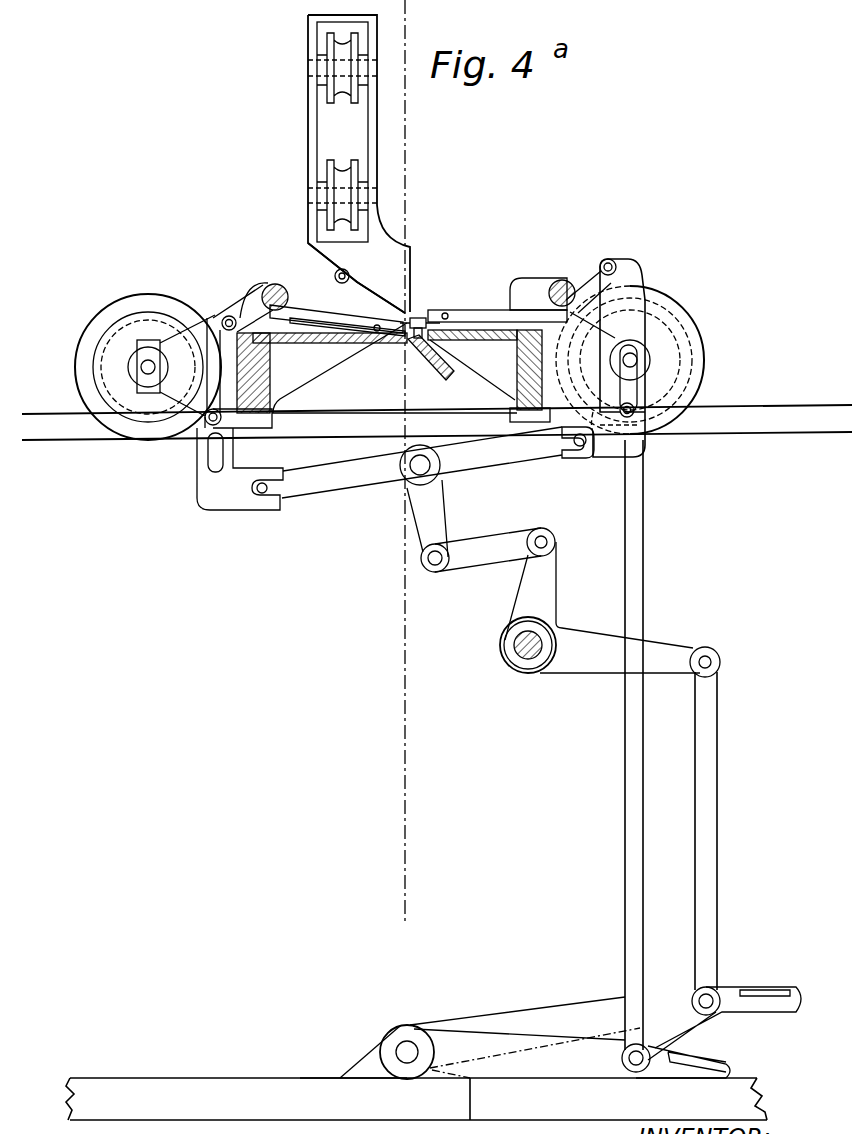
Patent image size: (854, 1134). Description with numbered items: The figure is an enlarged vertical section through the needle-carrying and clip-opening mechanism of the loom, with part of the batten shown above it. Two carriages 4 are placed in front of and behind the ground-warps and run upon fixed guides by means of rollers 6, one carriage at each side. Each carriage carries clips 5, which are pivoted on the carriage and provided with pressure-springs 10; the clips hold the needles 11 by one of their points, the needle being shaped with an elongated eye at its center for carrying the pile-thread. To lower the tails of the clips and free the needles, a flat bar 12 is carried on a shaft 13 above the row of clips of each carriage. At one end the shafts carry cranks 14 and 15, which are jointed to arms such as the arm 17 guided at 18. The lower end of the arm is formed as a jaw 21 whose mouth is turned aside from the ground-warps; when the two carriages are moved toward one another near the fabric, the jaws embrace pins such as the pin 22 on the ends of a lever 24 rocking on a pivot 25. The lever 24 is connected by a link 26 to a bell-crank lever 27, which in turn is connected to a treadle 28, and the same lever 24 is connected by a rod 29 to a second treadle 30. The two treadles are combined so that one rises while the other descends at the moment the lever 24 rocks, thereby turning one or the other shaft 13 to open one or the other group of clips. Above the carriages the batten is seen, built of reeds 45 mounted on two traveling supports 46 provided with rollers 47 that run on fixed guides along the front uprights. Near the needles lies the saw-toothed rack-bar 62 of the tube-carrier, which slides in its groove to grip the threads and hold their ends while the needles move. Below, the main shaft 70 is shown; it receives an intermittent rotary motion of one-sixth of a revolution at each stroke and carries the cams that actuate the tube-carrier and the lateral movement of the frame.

The carriage 4 is at (393, 372).
The clip 5 is at (418, 305).
The roller 6 is at (704, 338).
The pressure-spring 10 is at (372, 314).
The needle 11 is at (420, 318).
The flat bar 12 is at (626, 276).
The shaft 13 is at (560, 284).
The crank 14 is at (600, 268).
The crank 15 is at (225, 316).
The arm 17 is at (235, 405).
The guide 18 is at (634, 404).
The jaw 21 is at (262, 505).
The pin 22 is at (578, 458).
The lever 24 is at (422, 462).
The pivot 25 is at (402, 466).
The link 26 is at (480, 548).
The bell-crank lever 27 is at (672, 650).
The treadle 28 is at (752, 990).
The rod 29 is at (626, 555).
The treadle 30 is at (698, 1058).
The reed 45 is at (356, 278).
The support 46 is at (310, 148).
The roller 47 is at (346, 162).
The rack-bar 62 is at (412, 345).
The main shaft 70 is at (527, 660).